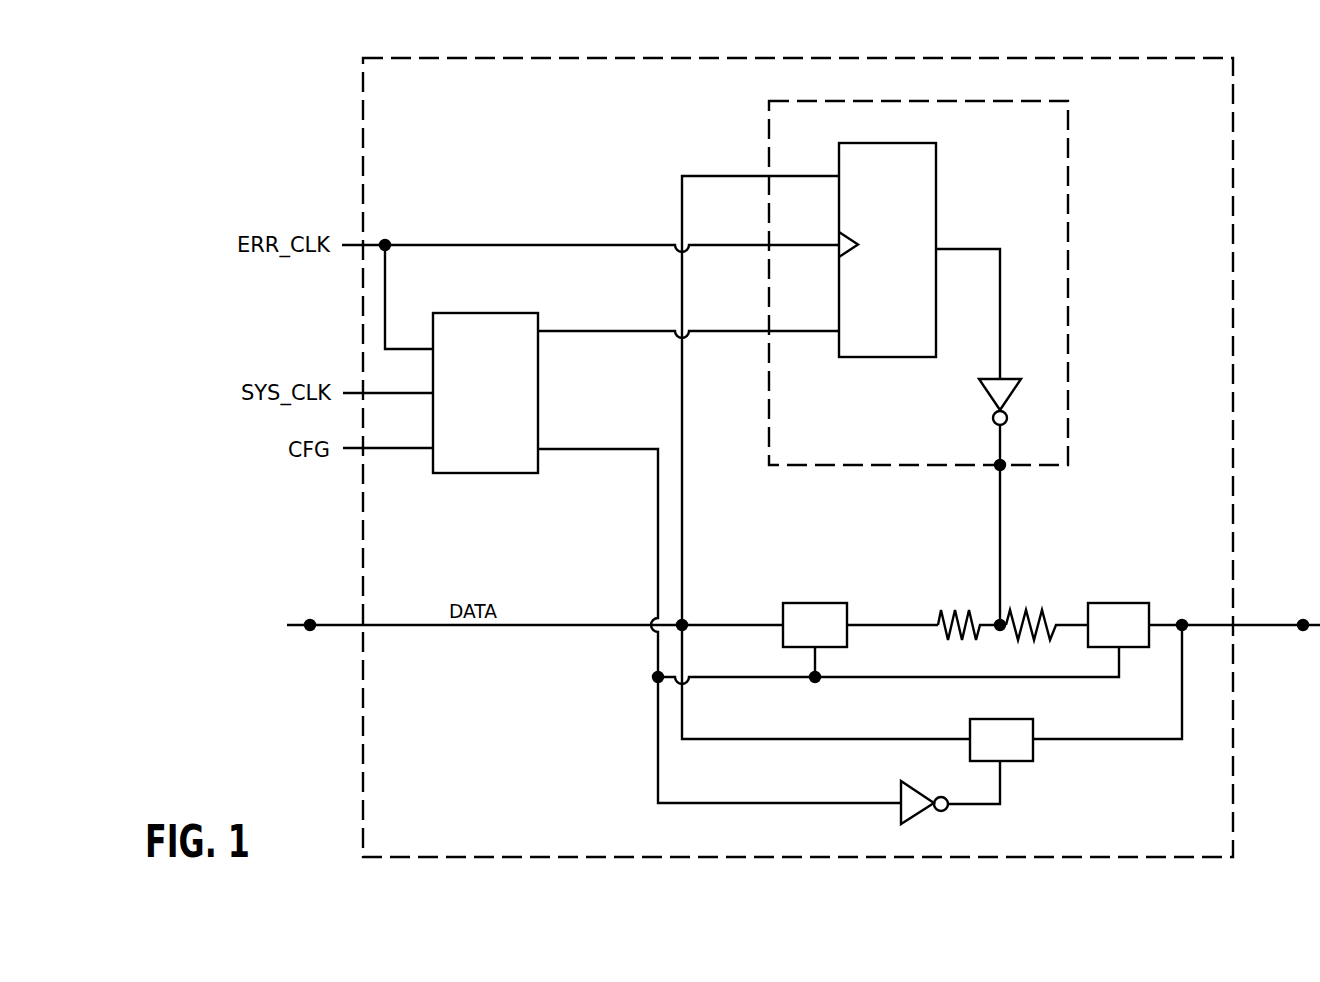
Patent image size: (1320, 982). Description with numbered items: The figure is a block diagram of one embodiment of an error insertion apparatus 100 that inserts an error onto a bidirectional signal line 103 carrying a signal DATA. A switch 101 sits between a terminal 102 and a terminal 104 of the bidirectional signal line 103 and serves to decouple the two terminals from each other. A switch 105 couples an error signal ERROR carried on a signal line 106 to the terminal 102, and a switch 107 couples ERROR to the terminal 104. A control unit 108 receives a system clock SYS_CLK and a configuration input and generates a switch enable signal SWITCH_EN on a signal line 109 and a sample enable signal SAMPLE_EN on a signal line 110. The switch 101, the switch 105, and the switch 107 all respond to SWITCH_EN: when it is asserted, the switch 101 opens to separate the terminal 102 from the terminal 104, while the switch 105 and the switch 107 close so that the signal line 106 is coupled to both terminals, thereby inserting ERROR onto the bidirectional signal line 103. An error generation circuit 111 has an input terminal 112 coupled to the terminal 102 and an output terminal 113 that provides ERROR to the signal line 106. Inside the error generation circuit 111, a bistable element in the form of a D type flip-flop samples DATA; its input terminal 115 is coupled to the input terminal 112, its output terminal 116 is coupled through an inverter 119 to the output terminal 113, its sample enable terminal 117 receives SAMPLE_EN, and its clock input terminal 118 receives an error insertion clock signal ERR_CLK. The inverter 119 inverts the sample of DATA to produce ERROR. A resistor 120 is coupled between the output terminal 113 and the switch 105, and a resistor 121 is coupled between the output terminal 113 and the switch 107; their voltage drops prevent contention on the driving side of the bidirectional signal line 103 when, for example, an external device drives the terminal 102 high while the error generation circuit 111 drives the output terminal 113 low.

The error insertion apparatus 100 is at (1179, 105).
The switch 101 is at (1041, 724).
The terminal 102 is at (306, 607).
The bidirectional signal line 103 is at (514, 625).
The terminal 104 is at (1234, 609).
The switch 105 is at (860, 642).
The signal line 106 is at (1015, 587).
The switch 107 is at (903, 643).
The control unit 108 is at (485, 393).
The signal line 109 is at (719, 614).
The signal line 110 is at (653, 333).
The error generation circuit 111 is at (1048, 143).
The input terminal 112 is at (823, 444).
The output terminal 113 is at (1034, 525).
The input terminal 115 is at (804, 161).
The output terminal 116 is at (968, 296).
The sample enable terminal 117 is at (804, 317).
The clock input terminal 118 is at (813, 235).
The inverter 119 is at (1017, 402).
The resistor 120 is at (972, 608).
The resistor 121 is at (1047, 608).